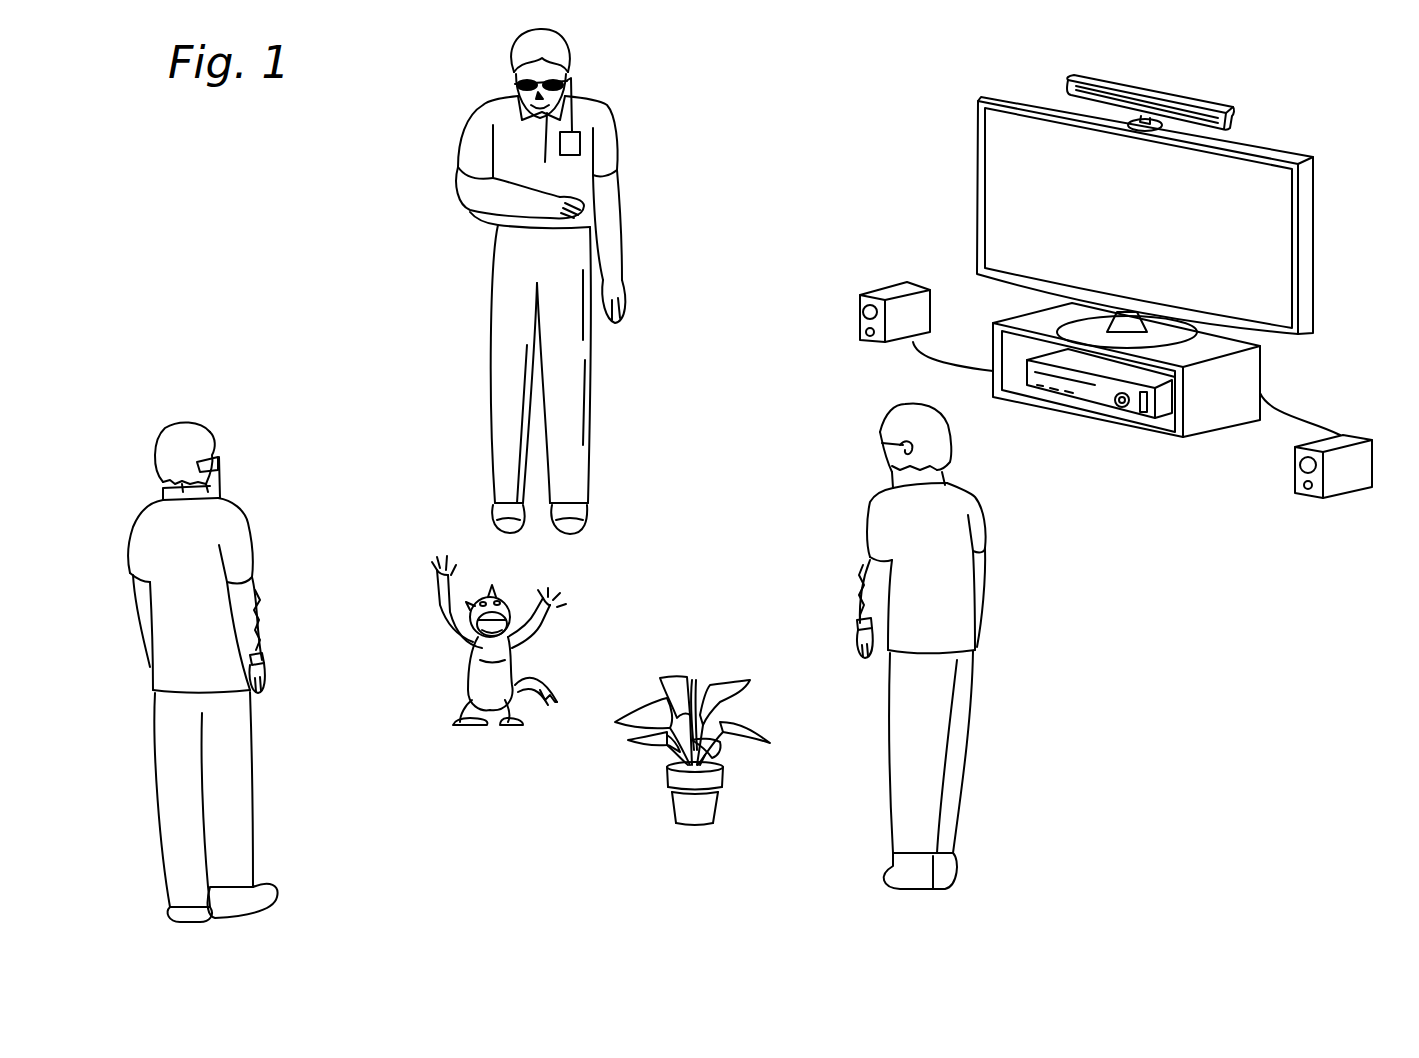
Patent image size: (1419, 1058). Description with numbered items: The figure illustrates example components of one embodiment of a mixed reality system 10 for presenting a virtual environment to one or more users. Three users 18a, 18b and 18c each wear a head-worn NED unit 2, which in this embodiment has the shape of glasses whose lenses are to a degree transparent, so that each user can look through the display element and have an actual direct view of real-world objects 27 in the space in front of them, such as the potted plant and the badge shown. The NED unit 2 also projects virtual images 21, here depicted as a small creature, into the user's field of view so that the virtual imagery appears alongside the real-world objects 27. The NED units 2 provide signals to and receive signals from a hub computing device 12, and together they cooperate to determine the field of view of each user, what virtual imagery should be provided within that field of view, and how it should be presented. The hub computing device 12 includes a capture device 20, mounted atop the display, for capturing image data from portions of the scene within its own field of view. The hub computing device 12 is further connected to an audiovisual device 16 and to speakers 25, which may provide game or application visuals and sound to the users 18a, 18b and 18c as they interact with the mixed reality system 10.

The NED unit 2 is at (517, 87).
The mixed reality system 10 is at (1232, 677).
The hub computing device 12 is at (1100, 403).
The audiovisual device 16 is at (1315, 228).
The user 18a is at (600, 118).
The user 18b is at (245, 533).
The user 18c is at (958, 484).
The capture device 20 is at (1153, 103).
The virtual image 21 is at (543, 578).
The speakers 25 is at (912, 290).
The real-world object 27 is at (573, 203).